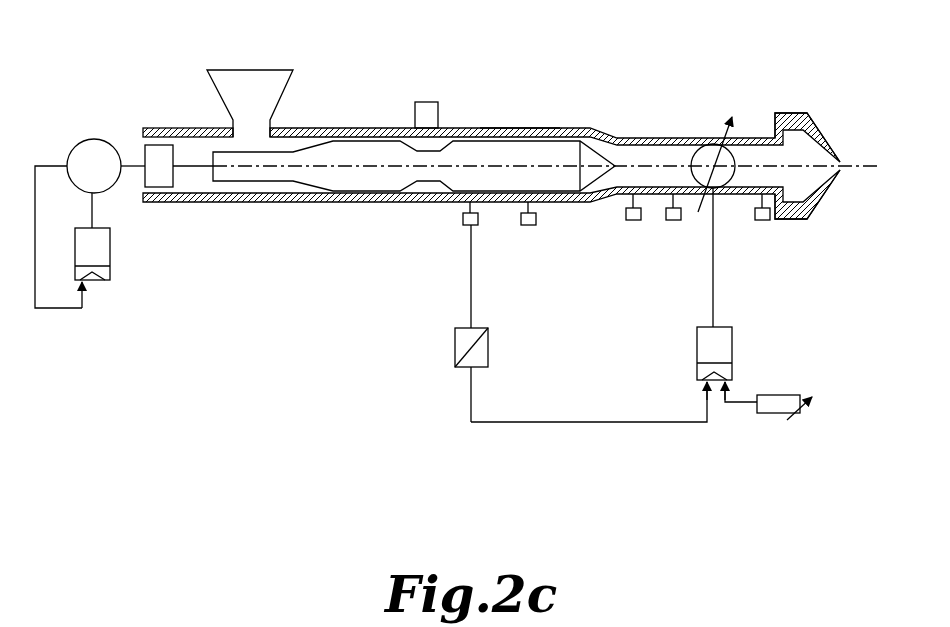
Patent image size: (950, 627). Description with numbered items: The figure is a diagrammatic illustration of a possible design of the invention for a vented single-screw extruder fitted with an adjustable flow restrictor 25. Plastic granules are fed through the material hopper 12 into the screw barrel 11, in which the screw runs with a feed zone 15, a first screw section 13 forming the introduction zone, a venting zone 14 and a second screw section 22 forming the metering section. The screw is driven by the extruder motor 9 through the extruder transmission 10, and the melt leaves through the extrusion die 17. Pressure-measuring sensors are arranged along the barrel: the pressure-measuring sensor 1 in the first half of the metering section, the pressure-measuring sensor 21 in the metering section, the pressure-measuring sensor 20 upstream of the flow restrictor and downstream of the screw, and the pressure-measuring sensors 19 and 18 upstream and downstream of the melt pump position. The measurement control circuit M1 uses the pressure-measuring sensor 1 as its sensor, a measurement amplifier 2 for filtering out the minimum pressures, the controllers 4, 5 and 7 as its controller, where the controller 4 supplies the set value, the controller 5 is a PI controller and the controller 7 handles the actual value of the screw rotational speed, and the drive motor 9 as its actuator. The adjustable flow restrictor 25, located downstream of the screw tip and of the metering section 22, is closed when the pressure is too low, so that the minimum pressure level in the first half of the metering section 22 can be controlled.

The pressure-measuring sensor 1 is at (460, 226).
The measurement amplifier 2 is at (488, 350).
The controller 4 is at (780, 395).
The controller 5 is at (728, 341).
The controller 7 is at (112, 247).
The extruder motor 9 is at (85, 143).
The extruder transmission 10 is at (145, 149).
The screw barrel 11 is at (191, 128).
The material hopper 12 is at (258, 82).
The first screw section 13 is at (347, 145).
The venting zone 14 is at (427, 105).
The feed zone 15 is at (298, 197).
The extrusion die 17 is at (801, 117).
The pressure-measuring sensor 18 is at (766, 224).
The pressure-measuring sensor 19 is at (676, 223).
The pressure-measuring sensor 20 is at (633, 223).
The pressure-measuring sensor 21 is at (531, 228).
The second screw section 22 is at (510, 138).
The adjustable flow restrictor 25 is at (704, 148).
The measurement control circuit M1 is at (590, 435).